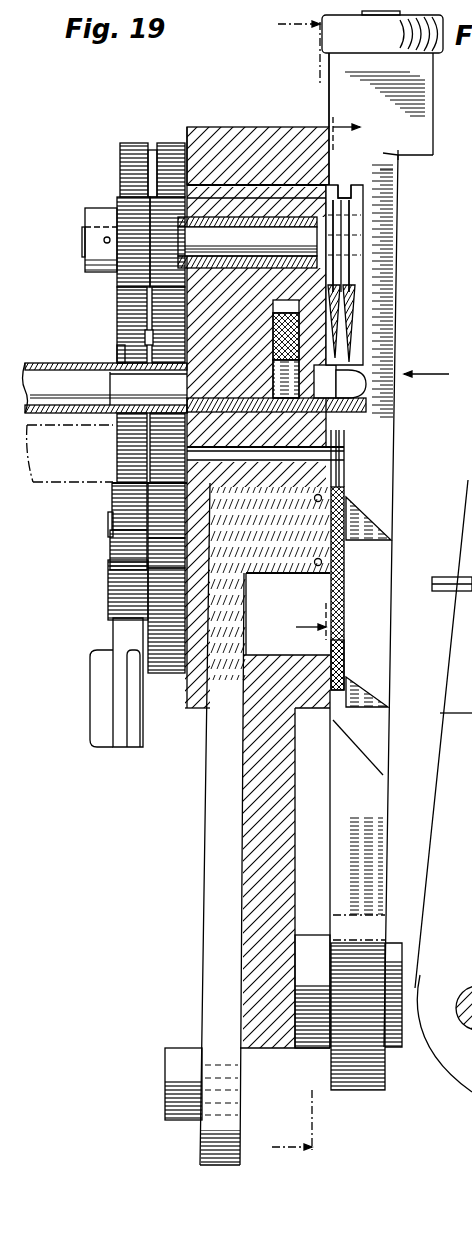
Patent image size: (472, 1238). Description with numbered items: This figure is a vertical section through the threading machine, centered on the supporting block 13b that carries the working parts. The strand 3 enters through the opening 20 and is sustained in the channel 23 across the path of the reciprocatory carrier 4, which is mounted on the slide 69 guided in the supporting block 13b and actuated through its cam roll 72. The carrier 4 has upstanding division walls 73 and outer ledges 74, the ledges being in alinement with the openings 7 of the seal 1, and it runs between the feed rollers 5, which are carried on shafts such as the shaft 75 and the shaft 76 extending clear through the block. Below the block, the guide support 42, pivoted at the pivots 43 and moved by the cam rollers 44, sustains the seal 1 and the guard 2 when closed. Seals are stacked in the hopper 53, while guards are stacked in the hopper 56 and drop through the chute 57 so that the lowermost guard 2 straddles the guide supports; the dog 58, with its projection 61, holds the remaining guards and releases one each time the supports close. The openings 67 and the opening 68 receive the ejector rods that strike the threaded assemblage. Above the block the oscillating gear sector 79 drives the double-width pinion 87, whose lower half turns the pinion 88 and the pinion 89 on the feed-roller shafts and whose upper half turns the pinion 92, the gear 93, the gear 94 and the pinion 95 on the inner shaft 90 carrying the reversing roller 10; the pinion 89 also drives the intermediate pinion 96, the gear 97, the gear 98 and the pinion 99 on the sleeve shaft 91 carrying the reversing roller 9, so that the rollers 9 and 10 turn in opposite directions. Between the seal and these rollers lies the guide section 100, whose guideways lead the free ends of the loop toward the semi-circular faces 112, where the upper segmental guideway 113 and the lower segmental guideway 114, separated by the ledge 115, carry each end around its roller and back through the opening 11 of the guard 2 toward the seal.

The seal 1 is at (346, 445).
The guard 2 is at (346, 397).
The strand 3 is at (333, 582).
The carrier 4 is at (311, 527).
The feed rollers 5 is at (336, 642).
The openings of the seal 7 is at (333, 378).
The reversing roller 9 is at (353, 218).
The reversing roller 10 is at (336, 238).
The opening of the guard 11 is at (343, 418).
The supporting block 13b is at (260, 762).
The opening 20 is at (305, 592).
The channel 23 is at (426, 364).
The guide support 42 is at (389, 170).
The pivots 43 is at (397, 943).
The cam rollers 44 is at (382, 32).
The hopper 53 is at (33, 483).
The hopper 56 is at (62, 348).
The chute 57 is at (213, 400).
The dog 58 is at (291, 328).
The projection of the dog 61 is at (286, 370).
The openings 67 is at (222, 232).
The opening 68 is at (339, 465).
The slide 69 is at (203, 887).
The cam roll 72 is at (170, 1052).
The division walls 73 is at (343, 552).
The outer ledges 74 is at (343, 527).
The shaft 75 is at (142, 637).
The shaft 76 is at (110, 525).
The gear sector 79 is at (95, 690).
The double-width pinion 87 is at (118, 573).
The pinion 88 is at (163, 672).
The pinion 89 is at (162, 525).
The inner shaft 90 is at (200, 220).
The sleeve shaft 91 is at (205, 182).
The pinion 92 is at (115, 492).
The gear 93 is at (117, 350).
The gear 94 is at (120, 152).
The pinion 95 is at (123, 202).
The intermediate pinion 96 is at (115, 443).
The gear 97 is at (147, 340).
The gear 98 is at (153, 150).
The pinion 99 is at (167, 200).
The guide section 100 is at (361, 288).
The semi-circular faces 112 is at (351, 188).
The upper segmental guideway 113 is at (336, 192).
The lower segmental guideway 114 is at (398, 152).
The ledge 115 is at (383, 153).